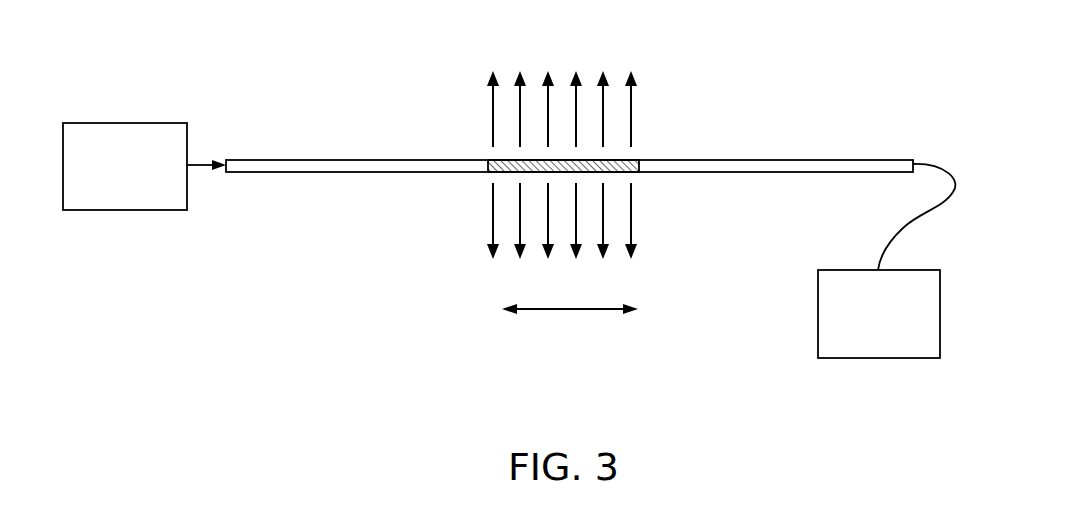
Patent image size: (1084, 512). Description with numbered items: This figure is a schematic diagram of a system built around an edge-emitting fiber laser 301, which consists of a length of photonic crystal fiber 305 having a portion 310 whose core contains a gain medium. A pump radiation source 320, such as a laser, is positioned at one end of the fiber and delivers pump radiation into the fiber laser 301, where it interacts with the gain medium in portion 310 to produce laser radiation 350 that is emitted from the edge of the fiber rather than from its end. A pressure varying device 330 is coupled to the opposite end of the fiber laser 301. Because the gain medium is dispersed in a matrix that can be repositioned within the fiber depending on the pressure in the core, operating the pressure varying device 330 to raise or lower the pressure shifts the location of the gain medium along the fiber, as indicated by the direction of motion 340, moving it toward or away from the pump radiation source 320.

The fiber laser 301 is at (344, 117).
The photonic crystal fiber 305 is at (302, 170).
The portion 310 is at (627, 160).
The pump radiation source 320 is at (125, 166).
The pressure varying device 330 is at (879, 314).
The axial strain direction 340 is at (562, 311).
The laser radiation 350 is at (493, 120).